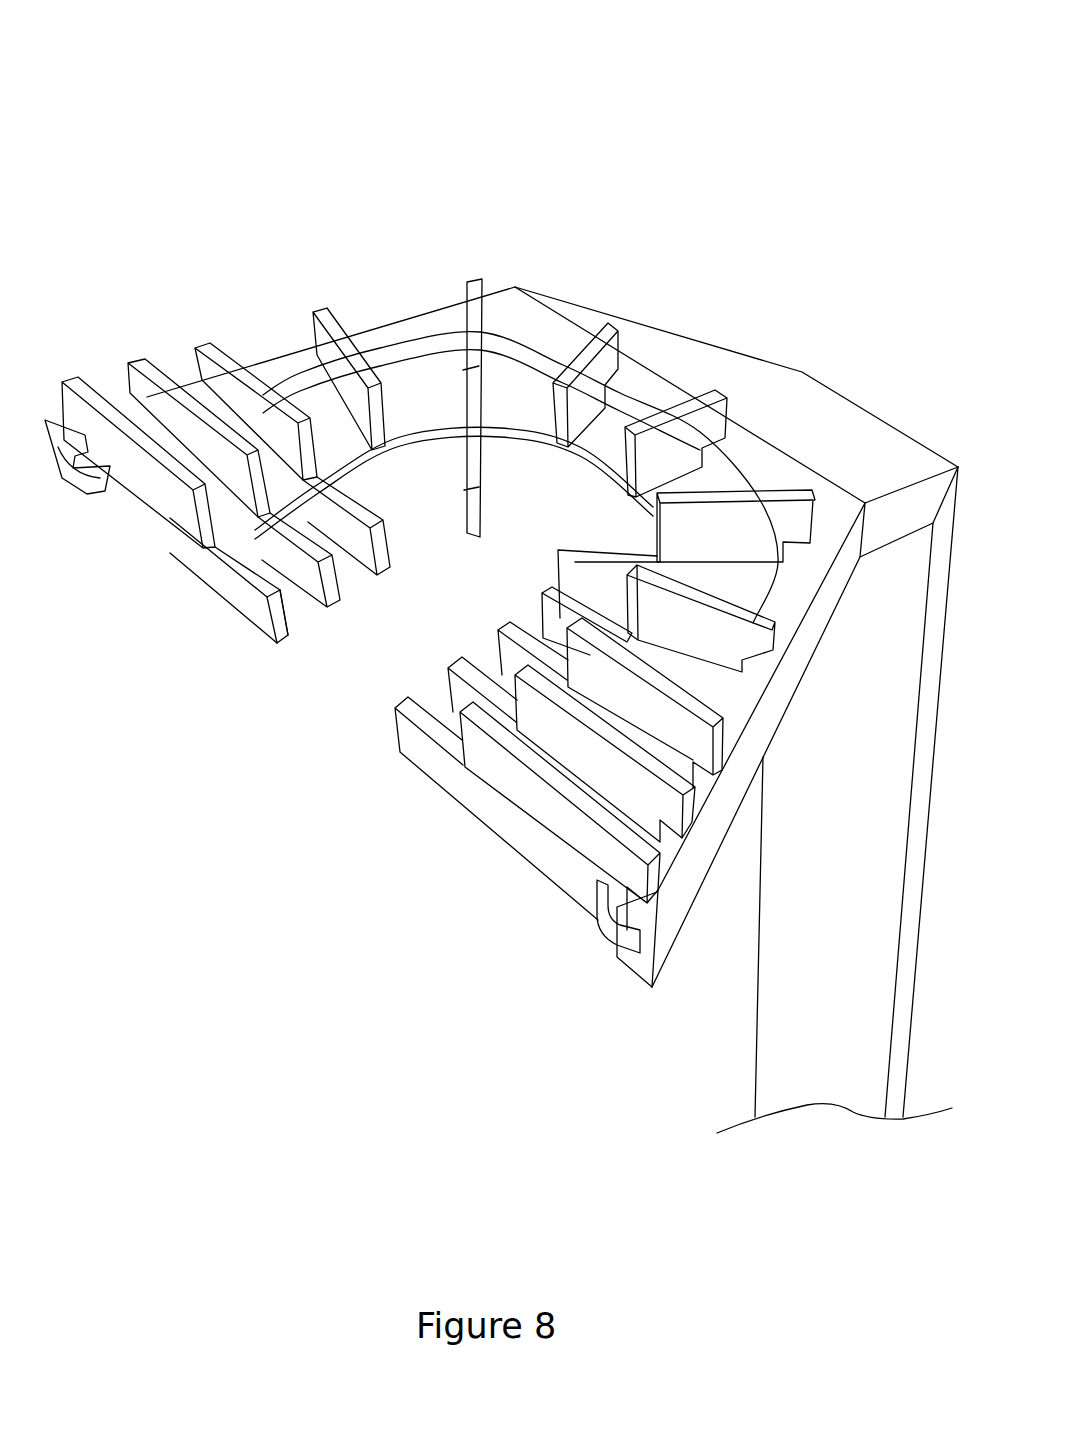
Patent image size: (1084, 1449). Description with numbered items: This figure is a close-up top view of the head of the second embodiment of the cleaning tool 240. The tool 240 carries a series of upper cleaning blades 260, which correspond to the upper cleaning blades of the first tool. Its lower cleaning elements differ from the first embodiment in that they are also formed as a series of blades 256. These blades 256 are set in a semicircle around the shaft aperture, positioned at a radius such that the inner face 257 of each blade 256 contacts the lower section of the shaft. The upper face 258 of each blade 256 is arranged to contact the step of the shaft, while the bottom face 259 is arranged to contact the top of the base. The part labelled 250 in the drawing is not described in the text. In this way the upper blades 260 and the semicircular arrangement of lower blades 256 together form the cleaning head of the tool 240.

The cleaning tool 240 is at (144, 125).
The base plate 250 is at (455, 798).
The blades 256 is at (253, 608).
The inner face 257 is at (277, 615).
The upper face 258 is at (247, 573).
The bottom face 259 is at (263, 637).
The upper cleaning blades 260 is at (708, 427).